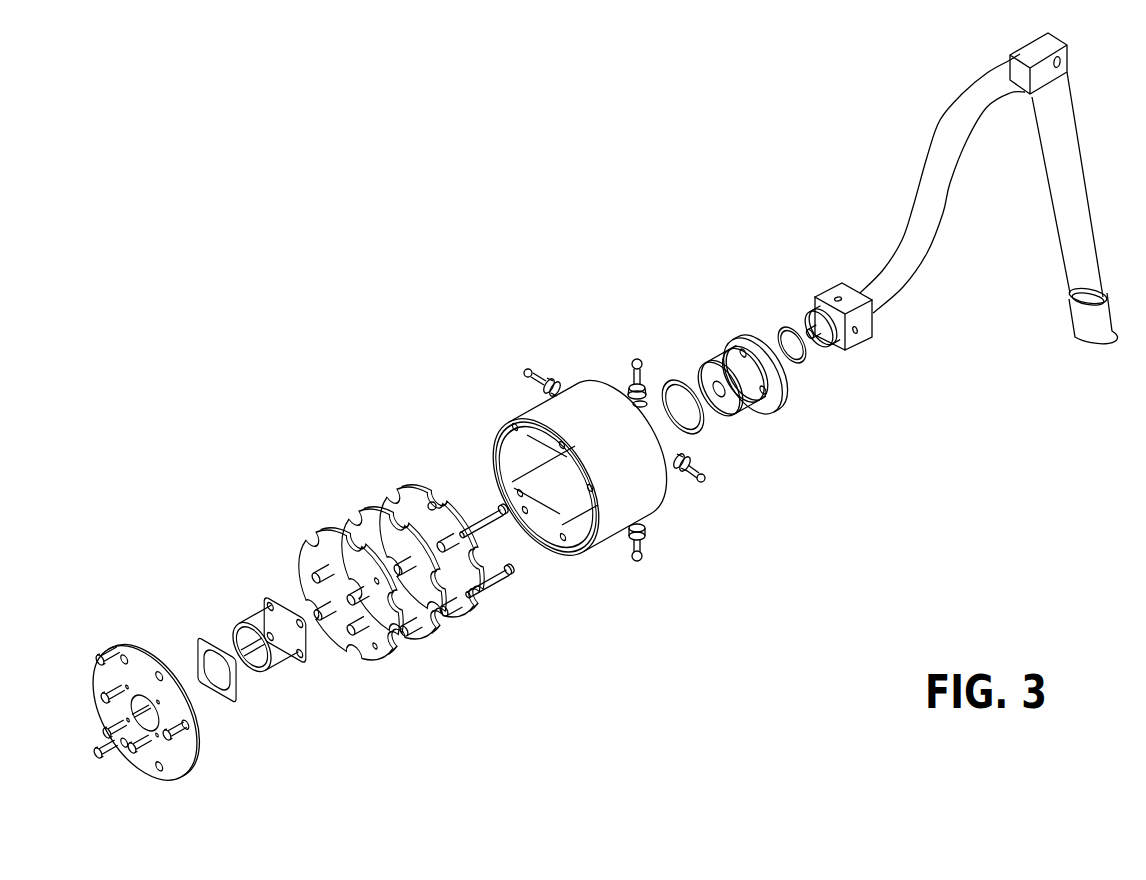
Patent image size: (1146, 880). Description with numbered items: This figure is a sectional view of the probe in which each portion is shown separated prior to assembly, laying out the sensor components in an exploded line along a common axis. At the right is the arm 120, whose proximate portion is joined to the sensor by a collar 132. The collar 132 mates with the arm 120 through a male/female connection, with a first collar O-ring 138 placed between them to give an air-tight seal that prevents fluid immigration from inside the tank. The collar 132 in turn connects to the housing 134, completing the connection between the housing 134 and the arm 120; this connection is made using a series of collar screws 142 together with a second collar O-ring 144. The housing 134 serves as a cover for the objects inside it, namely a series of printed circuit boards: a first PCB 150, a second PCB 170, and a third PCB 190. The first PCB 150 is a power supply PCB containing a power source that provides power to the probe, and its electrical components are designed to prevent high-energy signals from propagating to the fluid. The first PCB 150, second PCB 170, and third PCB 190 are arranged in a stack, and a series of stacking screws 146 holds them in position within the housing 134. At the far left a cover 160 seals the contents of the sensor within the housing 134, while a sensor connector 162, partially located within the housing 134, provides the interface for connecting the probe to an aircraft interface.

The arm 120 is at (931, 258).
The collar 132 is at (784, 404).
The housing 134 is at (654, 519).
The first collar O-ring 138 is at (806, 366).
The collar screws 142 is at (619, 374).
The second collar O-ring 144 is at (704, 434).
The stacking screws 146 is at (492, 501).
The first PCB 150 is at (383, 663).
The cover 160 is at (183, 777).
The sensor connector 162 is at (253, 622).
The second PCB 170 is at (418, 644).
The third PCB 190 is at (454, 618).